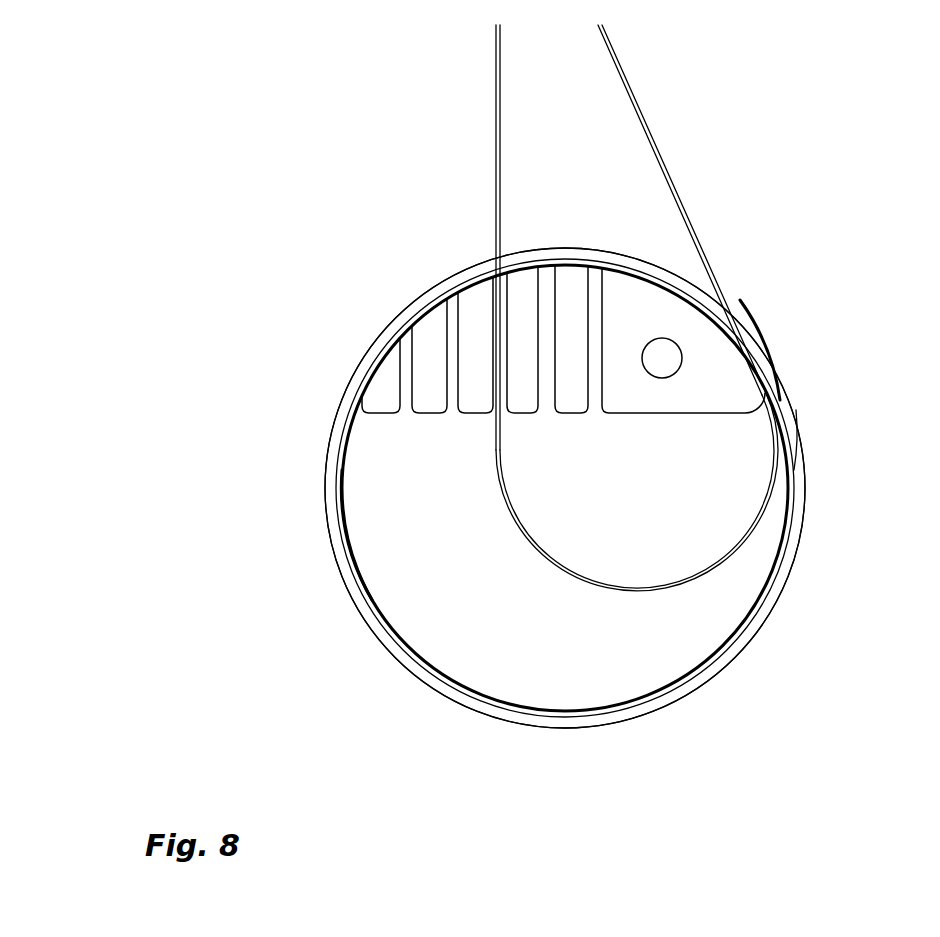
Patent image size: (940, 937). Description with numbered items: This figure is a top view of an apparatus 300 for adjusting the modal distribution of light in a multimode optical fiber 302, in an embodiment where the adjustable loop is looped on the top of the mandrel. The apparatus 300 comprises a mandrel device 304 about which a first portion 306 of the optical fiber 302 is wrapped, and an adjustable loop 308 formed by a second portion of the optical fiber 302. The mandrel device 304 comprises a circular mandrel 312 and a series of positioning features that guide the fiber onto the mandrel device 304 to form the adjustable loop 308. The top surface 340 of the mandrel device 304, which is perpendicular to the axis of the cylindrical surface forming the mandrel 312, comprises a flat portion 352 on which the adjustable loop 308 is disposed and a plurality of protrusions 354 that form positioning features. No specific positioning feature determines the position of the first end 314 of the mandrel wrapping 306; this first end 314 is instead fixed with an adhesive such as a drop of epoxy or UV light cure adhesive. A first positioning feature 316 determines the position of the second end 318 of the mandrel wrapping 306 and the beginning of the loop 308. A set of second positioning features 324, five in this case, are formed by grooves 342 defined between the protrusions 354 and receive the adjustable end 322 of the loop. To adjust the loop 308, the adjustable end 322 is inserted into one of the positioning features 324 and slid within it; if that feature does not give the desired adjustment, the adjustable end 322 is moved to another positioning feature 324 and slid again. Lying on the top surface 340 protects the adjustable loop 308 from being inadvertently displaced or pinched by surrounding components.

The apparatus 300 is at (328, 208).
The optical fiber 302 is at (757, 537).
The mandrel device 304 is at (398, 666).
The first portion of the optical fiber 306 is at (343, 506).
The adjustable loop 308 is at (653, 593).
The circular mandrel 312 is at (362, 588).
The first end of the mandrel wrapping 314 is at (660, 125).
The first positioning feature 316 is at (765, 372).
The second end of the mandrel wrapping 318 is at (780, 435).
The adjustable end of the loop 322 is at (492, 297).
The second positioning features 324 is at (505, 285).
The top surface 340 is at (540, 634).
The grooves 342 is at (543, 287).
The flat portion 352 is at (447, 522).
The protrusions 354 is at (377, 392).